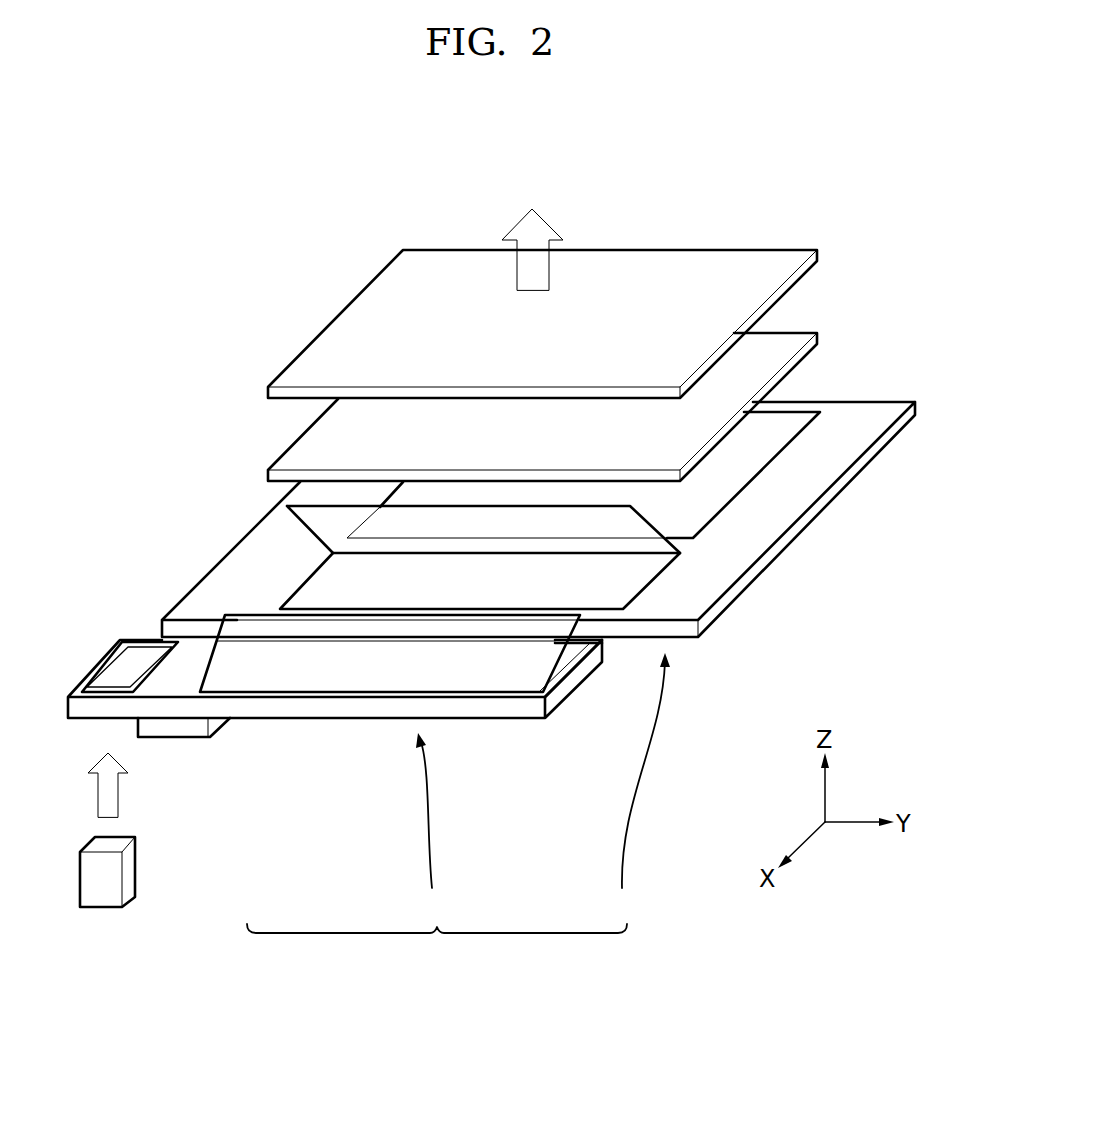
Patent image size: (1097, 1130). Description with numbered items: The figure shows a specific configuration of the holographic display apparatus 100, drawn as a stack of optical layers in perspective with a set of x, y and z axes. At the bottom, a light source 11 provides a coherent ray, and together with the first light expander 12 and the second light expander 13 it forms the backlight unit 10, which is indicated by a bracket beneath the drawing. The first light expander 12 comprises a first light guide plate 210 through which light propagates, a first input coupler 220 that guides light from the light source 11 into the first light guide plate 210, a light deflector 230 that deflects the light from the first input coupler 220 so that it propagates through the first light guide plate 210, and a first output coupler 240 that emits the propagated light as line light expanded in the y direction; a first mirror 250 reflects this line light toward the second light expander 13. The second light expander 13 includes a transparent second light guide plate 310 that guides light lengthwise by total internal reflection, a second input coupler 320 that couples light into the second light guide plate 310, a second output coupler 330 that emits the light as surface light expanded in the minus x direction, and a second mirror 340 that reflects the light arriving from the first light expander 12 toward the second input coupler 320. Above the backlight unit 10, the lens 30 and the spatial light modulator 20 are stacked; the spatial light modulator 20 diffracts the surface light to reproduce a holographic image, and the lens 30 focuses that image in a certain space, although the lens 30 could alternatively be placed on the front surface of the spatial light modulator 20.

The holographic display apparatus 100 is at (833, 147).
The backlight unit 10 is at (375, 810).
The light source 11 is at (133, 873).
The first light expander 12 is at (431, 827).
The second light expander 13 is at (638, 787).
The spatial light modulator 20 is at (817, 256).
The lens 30 is at (817, 340).
The second light guide plate 310 is at (865, 463).
The second input coupler 320 is at (308, 588).
The second output coupler 330 is at (742, 475).
The second mirror 340 is at (313, 530).
The first light guide plate 210 is at (307, 712).
The first input coupler 220 is at (113, 668).
The light deflector 230 is at (182, 735).
The first output coupler 240 is at (558, 665).
The first mirror 250 is at (470, 668).